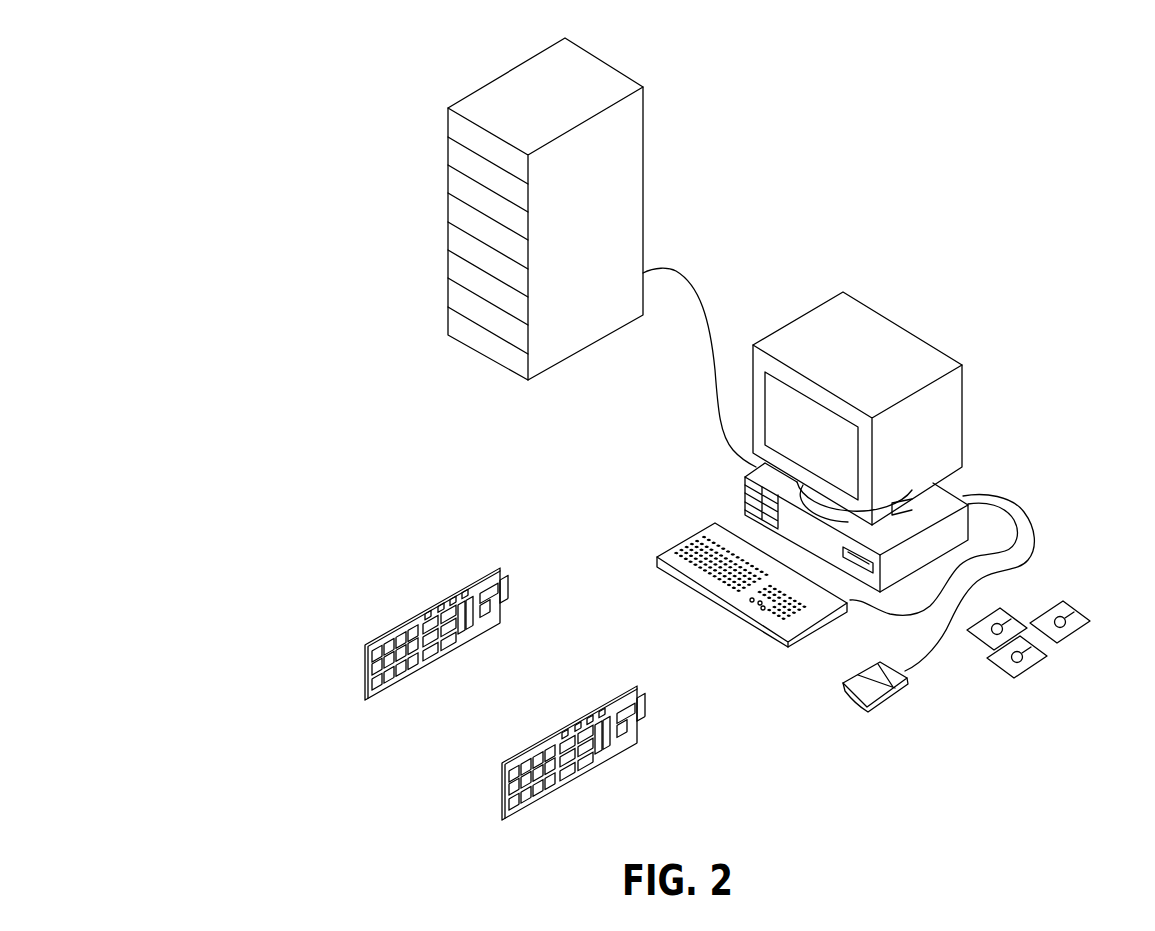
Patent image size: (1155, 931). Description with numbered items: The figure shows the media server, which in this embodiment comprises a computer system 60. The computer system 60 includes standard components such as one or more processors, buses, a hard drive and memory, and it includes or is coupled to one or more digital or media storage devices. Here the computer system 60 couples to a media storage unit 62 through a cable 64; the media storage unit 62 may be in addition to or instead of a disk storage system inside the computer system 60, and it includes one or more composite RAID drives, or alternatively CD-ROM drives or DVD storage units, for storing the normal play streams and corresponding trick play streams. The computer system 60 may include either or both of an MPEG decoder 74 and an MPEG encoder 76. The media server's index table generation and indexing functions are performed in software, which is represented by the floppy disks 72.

The computer system 60 is at (863, 323).
The media storage unit 62 is at (485, 85).
The cable 64 is at (682, 272).
The floppy disks 72 is at (1072, 595).
The MPEG decoder 74 is at (402, 622).
The MPEG encoder 76 is at (522, 752).